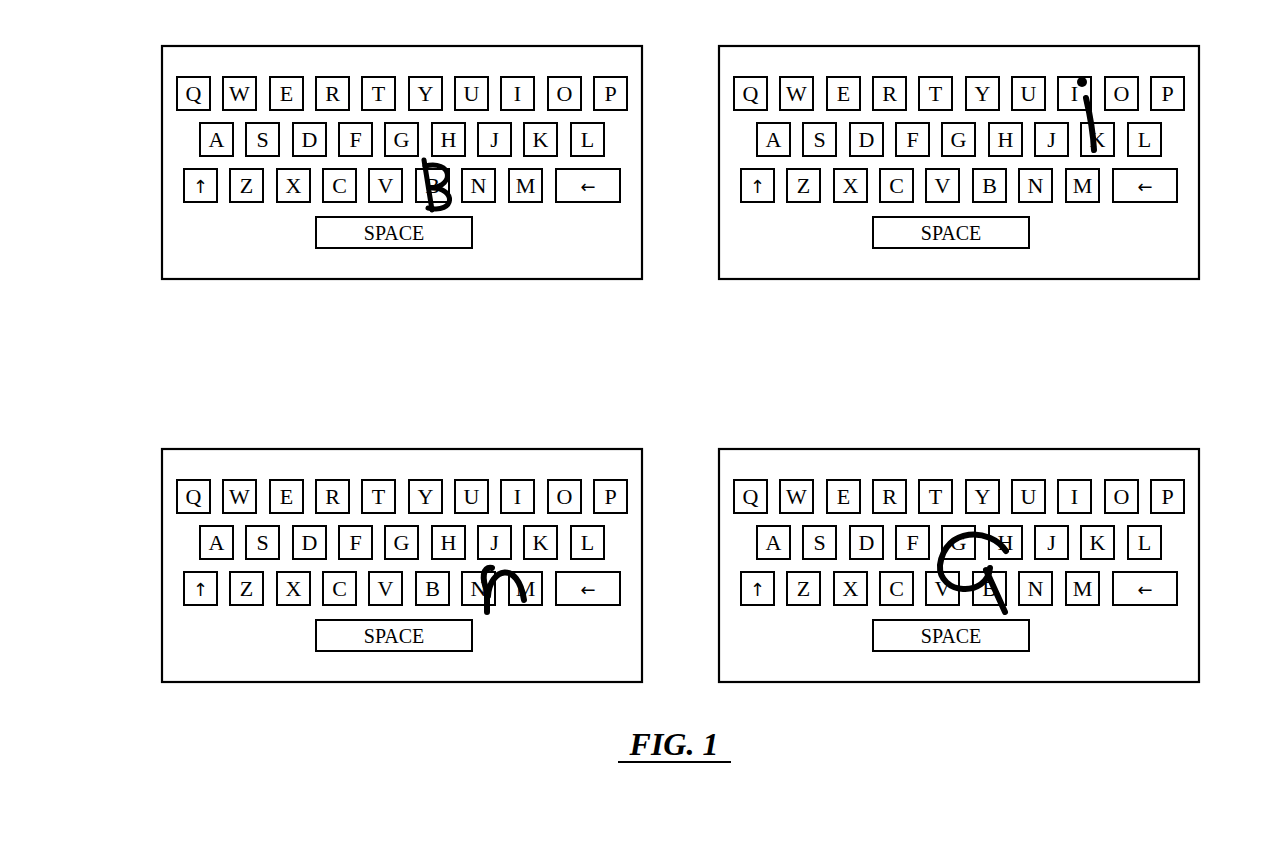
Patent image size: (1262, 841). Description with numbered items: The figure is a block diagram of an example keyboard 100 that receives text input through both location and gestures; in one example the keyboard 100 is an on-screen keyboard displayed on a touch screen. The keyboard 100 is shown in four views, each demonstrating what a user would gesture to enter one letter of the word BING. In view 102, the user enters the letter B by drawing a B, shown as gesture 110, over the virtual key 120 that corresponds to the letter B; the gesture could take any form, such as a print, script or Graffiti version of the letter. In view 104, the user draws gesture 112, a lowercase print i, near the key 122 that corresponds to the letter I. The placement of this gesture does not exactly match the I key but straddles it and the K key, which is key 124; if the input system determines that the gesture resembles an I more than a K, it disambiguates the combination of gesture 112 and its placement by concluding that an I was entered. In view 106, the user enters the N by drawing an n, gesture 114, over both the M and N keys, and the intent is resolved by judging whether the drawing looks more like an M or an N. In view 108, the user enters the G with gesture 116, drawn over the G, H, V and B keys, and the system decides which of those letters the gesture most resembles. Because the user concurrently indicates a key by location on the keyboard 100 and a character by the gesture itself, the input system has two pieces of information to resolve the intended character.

The keyboard 100 is at (680, 364).
The view 102 is at (337, 289).
The view 104 is at (959, 206).
The view 106 is at (505, 439).
The view 108 is at (1047, 439).
The gesture 110 is at (427, 158).
The gesture 112 is at (1100, 108).
The gesture 114 is at (488, 563).
The gesture 116 is at (967, 537).
The virtual key 120 is at (450, 178).
The key 122 is at (1069, 77).
The key 124 is at (1055, 156).